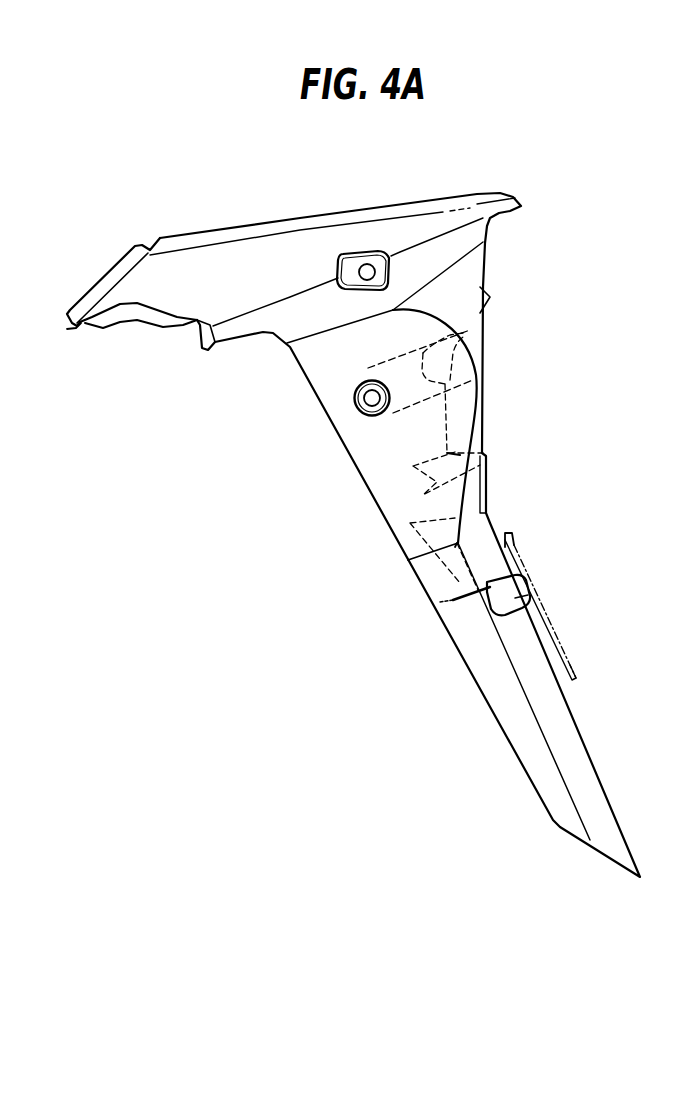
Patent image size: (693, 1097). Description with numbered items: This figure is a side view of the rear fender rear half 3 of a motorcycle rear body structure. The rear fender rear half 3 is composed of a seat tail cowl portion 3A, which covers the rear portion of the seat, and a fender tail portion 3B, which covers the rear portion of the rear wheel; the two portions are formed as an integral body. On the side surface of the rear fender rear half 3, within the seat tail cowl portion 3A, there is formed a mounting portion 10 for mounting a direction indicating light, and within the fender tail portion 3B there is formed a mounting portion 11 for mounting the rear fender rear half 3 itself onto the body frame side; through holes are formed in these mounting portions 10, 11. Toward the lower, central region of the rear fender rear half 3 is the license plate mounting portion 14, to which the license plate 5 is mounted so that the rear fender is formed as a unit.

The rear fender rear half 3 is at (420, 206).
The seat tail cowl portion 3A is at (270, 256).
The fender tail portion 3B is at (370, 487).
The mounting portion 10 is at (369, 264).
The mounting portion 11 is at (363, 398).
The license plate mounting portion 14 is at (515, 597).
The license plate 5 is at (576, 678).